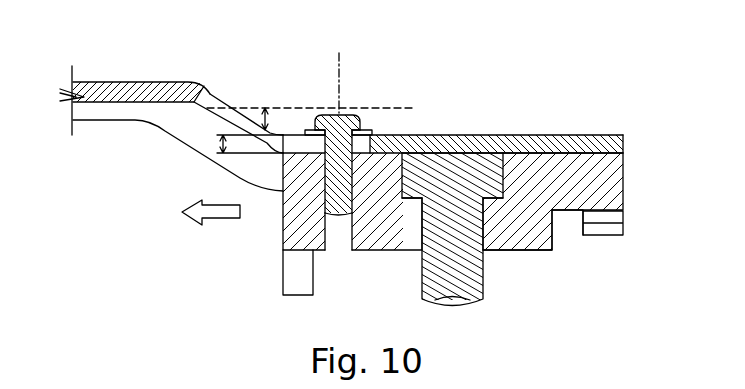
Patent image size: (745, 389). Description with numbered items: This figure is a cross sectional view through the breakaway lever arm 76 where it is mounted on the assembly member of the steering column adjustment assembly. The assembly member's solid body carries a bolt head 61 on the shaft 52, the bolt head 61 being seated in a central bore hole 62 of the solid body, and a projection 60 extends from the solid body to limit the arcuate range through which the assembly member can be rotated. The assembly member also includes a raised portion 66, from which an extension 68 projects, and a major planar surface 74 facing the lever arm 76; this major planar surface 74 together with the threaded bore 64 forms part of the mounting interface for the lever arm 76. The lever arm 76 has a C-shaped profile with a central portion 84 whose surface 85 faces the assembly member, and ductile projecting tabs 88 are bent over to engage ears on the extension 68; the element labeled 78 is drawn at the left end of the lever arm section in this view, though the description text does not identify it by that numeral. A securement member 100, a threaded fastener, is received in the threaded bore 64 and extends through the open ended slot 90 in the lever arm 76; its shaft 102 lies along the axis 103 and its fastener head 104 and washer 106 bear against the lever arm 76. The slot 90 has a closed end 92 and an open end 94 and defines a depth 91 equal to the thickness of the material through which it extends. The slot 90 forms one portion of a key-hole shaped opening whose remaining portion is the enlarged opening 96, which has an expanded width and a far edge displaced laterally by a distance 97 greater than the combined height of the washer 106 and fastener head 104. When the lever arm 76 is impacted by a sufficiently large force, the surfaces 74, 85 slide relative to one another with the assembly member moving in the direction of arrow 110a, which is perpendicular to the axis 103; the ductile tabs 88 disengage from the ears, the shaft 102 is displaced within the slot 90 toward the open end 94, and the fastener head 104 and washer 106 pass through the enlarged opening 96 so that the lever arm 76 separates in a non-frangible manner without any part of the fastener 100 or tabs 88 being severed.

The shaft 52 is at (478, 277).
The projection 60 is at (282, 278).
The bolt head 61 is at (455, 183).
The central bore hole 62 is at (488, 217).
The threaded bore 64 is at (347, 248).
The raised portion 66 is at (553, 238).
The extension 68 is at (568, 213).
The major planar surface 74 is at (577, 150).
The breakaway lever arm 76 is at (171, 81).
The flange strip 78 is at (117, 80).
The central portion 84 is at (508, 134).
The surface 85 is at (597, 158).
The ductile projecting tabs 88 is at (613, 230).
The open ended slot 90 is at (297, 134).
The depth 91 is at (221, 144).
The closed end 92 is at (425, 144).
The open end 94 is at (282, 136).
The enlarged opening 96 is at (225, 98).
The lateral displacement distance 97 is at (265, 107).
The securement member 100 is at (334, 170).
The shaft 102 is at (342, 213).
The axis 103 is at (340, 53).
The fastener head 104 is at (360, 116).
The washer 106 is at (368, 137).
The relative movement arrow 110a is at (190, 221).